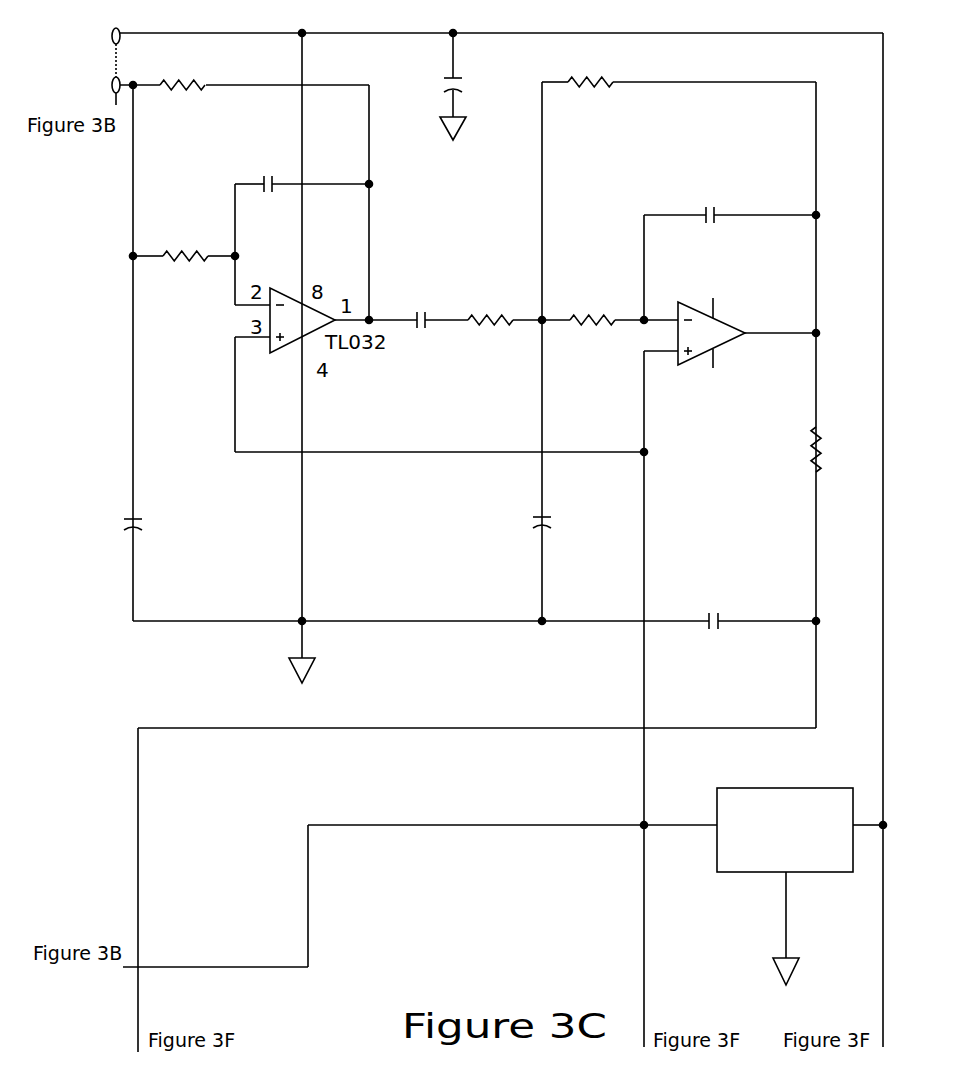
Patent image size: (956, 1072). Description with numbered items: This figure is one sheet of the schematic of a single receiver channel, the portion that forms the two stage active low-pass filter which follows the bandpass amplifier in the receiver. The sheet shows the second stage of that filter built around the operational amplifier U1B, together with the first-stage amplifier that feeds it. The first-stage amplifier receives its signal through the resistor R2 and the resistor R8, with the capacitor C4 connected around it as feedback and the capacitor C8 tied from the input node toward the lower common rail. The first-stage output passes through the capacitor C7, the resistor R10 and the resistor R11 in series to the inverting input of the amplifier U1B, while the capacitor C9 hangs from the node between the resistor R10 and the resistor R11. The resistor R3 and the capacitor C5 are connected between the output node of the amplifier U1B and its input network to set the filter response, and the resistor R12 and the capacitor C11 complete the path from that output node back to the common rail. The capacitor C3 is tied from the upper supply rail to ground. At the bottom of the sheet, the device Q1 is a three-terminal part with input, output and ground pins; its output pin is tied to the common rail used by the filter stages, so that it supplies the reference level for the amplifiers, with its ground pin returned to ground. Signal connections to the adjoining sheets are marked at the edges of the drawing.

The resistor 75K R2 is at (182, 83).
The resistor 75K R3 is at (590, 81).
The resistor 28K R8 is at (185, 255).
The resistor 16.9K R10 is at (515, 321).
The resistor 28K R11 is at (624, 321).
The resistor 2K R12 is at (838, 451).
The capacitor 47 C3 is at (464, 86).
The capacitor .001 C4 is at (302, 187).
The capacitor .001 C5 is at (730, 219).
The capacitor .03 C7 is at (437, 321).
The capacitor .01 C8 is at (151, 526).
The capacitor .01 C9 is at (560, 525).
The capacitor .047 C11 is at (754, 622).
The second stage of the two stage active low-pass filter U1B is at (737, 304).
The voltage reference TLE2426 Q1 is at (784, 874).